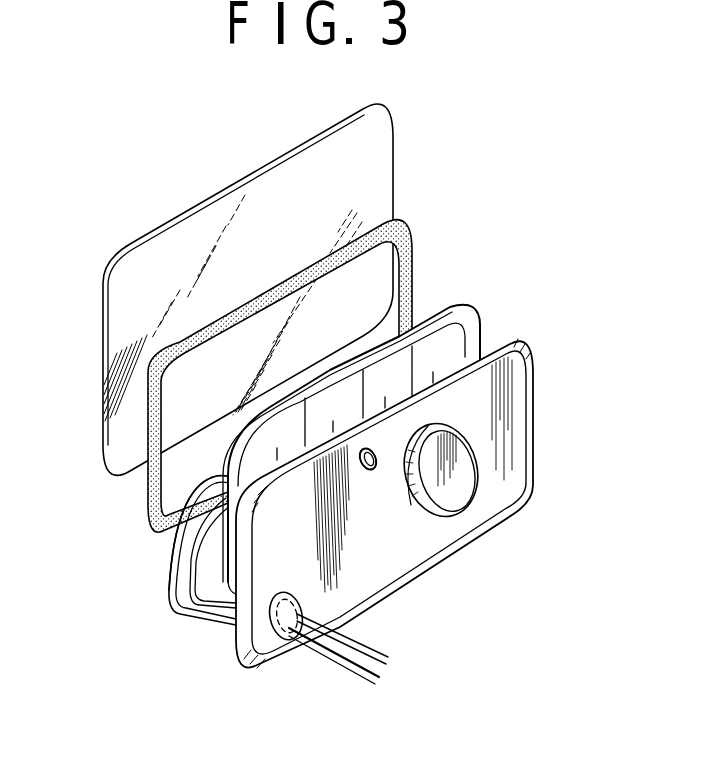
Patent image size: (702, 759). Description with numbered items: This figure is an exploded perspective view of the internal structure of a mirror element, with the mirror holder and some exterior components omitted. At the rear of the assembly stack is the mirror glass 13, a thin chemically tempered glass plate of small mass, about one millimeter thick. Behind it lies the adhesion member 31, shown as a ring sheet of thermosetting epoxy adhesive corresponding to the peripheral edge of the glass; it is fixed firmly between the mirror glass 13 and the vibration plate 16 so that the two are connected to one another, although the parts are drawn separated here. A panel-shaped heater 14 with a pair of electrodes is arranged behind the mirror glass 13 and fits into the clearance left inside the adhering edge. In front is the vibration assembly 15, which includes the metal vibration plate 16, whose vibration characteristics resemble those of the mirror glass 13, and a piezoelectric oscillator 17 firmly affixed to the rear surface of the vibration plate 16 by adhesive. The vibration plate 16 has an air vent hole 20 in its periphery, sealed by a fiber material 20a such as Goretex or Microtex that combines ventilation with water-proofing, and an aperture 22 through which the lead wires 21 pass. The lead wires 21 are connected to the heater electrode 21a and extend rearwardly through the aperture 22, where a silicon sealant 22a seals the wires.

The mirror glass 13 is at (205, 218).
The adhesion member 31 is at (147, 503).
The heater 14 is at (433, 338).
The lead wires 21 is at (164, 633).
The heater electrode 21a is at (163, 523).
The vibration assembly 15 is at (431, 522).
The vibration plate 16 is at (518, 432).
The piezoelectric oscillator 17 is at (463, 468).
The air vent hole 20 is at (370, 470).
The fiber material 20a is at (373, 470).
The aperture 22 is at (300, 602).
The silicon sealant 22a is at (281, 648).